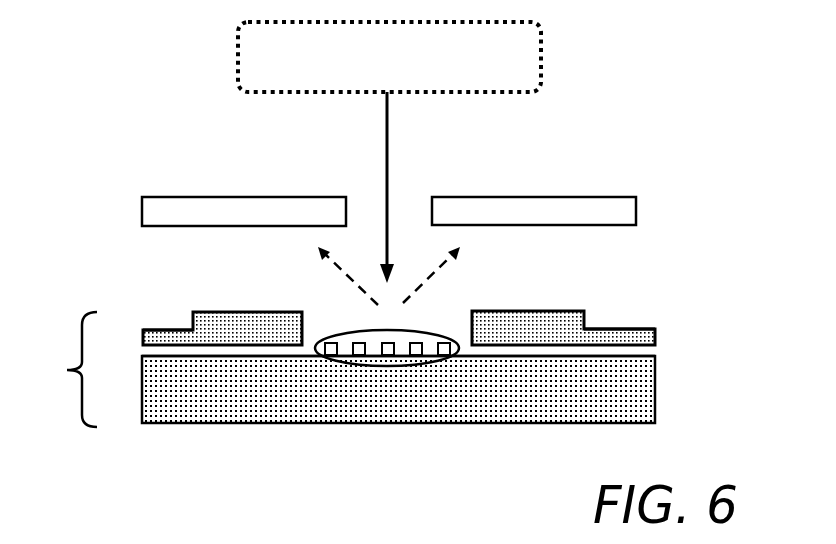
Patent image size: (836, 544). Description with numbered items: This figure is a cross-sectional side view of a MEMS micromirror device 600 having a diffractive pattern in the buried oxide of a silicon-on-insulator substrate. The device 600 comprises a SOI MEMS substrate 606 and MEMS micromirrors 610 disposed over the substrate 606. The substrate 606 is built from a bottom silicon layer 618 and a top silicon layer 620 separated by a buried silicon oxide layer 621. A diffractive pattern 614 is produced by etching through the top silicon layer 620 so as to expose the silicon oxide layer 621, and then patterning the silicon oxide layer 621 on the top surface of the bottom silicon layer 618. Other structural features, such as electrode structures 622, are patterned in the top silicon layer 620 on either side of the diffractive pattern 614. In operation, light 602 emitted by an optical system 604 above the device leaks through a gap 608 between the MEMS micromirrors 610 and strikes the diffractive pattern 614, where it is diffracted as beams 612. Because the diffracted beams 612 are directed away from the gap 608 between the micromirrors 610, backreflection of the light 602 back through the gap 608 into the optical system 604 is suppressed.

The MEMS micromirror device 600 is at (148, 73).
The light 602 is at (386, 153).
The optical system 604 is at (410, 70).
The SOI MEMS substrate 606 is at (379, 366).
The gap 608 is at (406, 171).
The MEMS micromirrors 610 is at (193, 197).
The diffracted beams 612 is at (337, 266).
The diffractive pattern 614 is at (357, 332).
The bottom silicon layer 618 is at (635, 408).
The top silicon layer 620 is at (670, 303).
The buried silicon oxide layer 621 is at (210, 348).
The electrode structures 622 is at (157, 330).